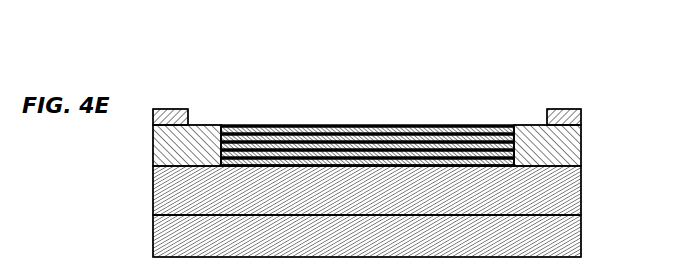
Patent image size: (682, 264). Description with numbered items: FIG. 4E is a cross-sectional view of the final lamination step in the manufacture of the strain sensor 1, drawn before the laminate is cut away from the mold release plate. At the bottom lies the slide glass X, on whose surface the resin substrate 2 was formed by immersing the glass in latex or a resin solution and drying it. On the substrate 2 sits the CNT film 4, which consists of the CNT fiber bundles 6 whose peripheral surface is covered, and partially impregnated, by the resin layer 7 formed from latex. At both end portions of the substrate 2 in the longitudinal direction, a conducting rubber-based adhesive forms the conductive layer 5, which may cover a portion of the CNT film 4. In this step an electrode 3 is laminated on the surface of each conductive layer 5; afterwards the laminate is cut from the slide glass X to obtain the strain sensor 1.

The strain sensor 1 is at (577, 91).
The substrate 2 is at (572, 191).
The electrode 3 is at (572, 117).
The CNT film 4 is at (490, 125).
The conductive layer 5 is at (572, 147).
The CNT fiber bundles 6 is at (414, 125).
The resin layer 7 is at (453, 125).
The slide glass X is at (572, 238).